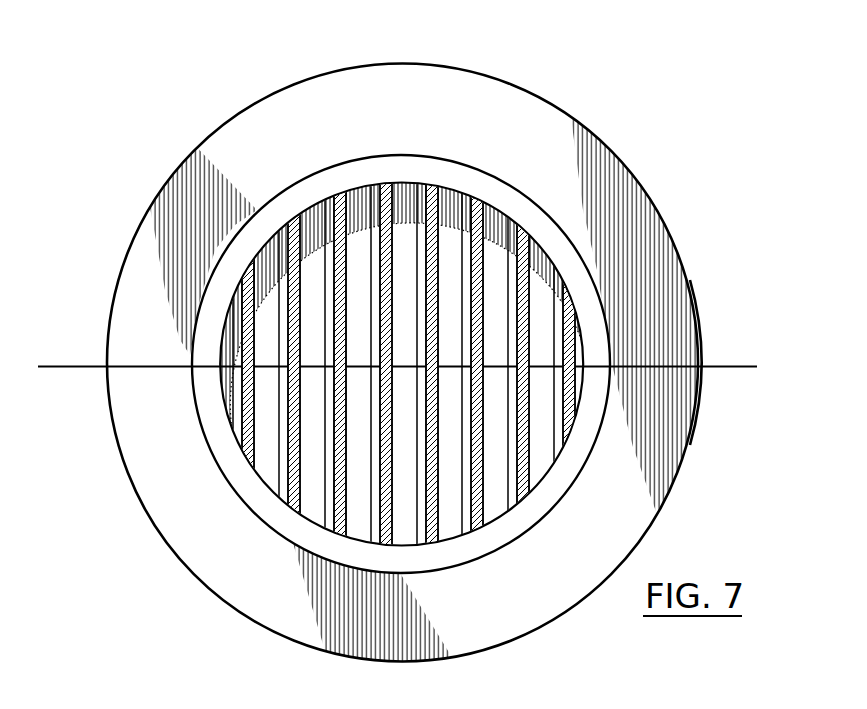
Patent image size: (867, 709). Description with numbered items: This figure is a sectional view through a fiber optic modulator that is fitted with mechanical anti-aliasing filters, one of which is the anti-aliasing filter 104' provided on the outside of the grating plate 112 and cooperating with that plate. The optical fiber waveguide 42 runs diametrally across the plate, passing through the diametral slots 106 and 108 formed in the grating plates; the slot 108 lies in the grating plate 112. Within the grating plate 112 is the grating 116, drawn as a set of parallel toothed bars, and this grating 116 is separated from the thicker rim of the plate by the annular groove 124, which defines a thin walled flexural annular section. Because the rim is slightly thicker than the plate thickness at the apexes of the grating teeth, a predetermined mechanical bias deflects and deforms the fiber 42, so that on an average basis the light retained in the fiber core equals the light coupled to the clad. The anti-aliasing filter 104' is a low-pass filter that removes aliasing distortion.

The optical fiber waveguide 42 is at (85, 367).
The mechanical anti-aliasing filter 104' is at (383, 363).
The diametral slot 106 is at (133, 366).
The diametral slot 108 is at (677, 366).
The grating plate 112 is at (668, 267).
The grating 116 is at (372, 212).
The annular groove 124 is at (550, 505).